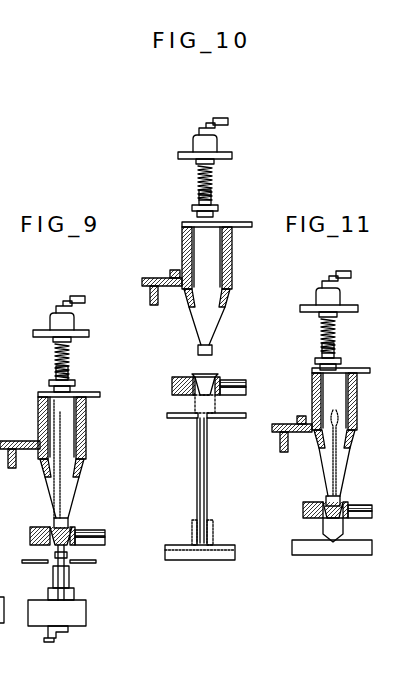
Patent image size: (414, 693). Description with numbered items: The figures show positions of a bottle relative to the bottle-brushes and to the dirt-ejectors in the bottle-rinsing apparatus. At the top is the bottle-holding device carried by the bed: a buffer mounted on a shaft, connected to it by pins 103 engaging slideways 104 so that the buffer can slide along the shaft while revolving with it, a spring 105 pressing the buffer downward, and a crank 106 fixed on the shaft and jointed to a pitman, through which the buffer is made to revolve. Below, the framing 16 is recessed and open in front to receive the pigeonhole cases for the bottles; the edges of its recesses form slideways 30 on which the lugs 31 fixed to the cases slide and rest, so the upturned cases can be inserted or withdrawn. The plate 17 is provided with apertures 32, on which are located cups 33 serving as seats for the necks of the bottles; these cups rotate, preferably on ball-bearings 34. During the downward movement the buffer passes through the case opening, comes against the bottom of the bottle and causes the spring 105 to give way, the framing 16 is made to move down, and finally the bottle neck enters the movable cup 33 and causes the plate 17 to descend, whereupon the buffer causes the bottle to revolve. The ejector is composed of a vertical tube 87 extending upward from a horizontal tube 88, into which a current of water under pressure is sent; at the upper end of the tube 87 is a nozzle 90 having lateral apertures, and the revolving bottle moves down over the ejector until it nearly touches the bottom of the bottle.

In FIG. 10, the framing 16 is at (152, 286).
In FIG. 9, the framing 16 is at (8, 449).
In FIG. 11, the framing 16 is at (278, 432).
In FIG. 9, the plate 17 is at (48, 640).
In FIG. 10, the slideways 30 is at (166, 286).
In FIG. 9, the slideways 30 is at (26, 452).
In FIG. 11, the slideways 30 is at (299, 432).
In FIG. 10, the lugs 31 is at (176, 270).
In FIG. 11, the lugs 31 is at (303, 416).
In FIG. 10, the apertures 32 is at (196, 396).
In FIG. 11, the apertures 32 is at (326, 520).
In FIG. 10, the cups 33 is at (213, 372).
In FIG. 9, the cups 33 is at (70, 522).
In FIG. 11, the cups 33 is at (342, 498).
In FIG. 10, the ball-bearings 34 is at (230, 380).
In FIG. 9, the ball-bearings 34 is at (78, 530).
In FIG. 11, the ball-bearings 34 is at (354, 504).
In FIG. 10, the vertical tubes 87 is at (210, 532).
In FIG. 10, the horizontal tubes 88 is at (210, 560).
In FIG. 10, the nozzle 90 is at (210, 411).
In FIG. 10, the pins 103 is at (196, 208).
In FIG. 9, the pins 103 is at (56, 376).
In FIG. 11, the pins 103 is at (322, 350).
In FIG. 10, the slideways 104 is at (212, 200).
In FIG. 9, the slideways 104 is at (69, 376).
In FIG. 11, the slideways 104 is at (336, 351).
In FIG. 10, the spring 105 is at (212, 183).
In FIG. 10, the cranks 106 is at (216, 124).
In FIG. 9, the cranks 106 is at (92, 290).
In FIG. 11, the cranks 106 is at (352, 275).